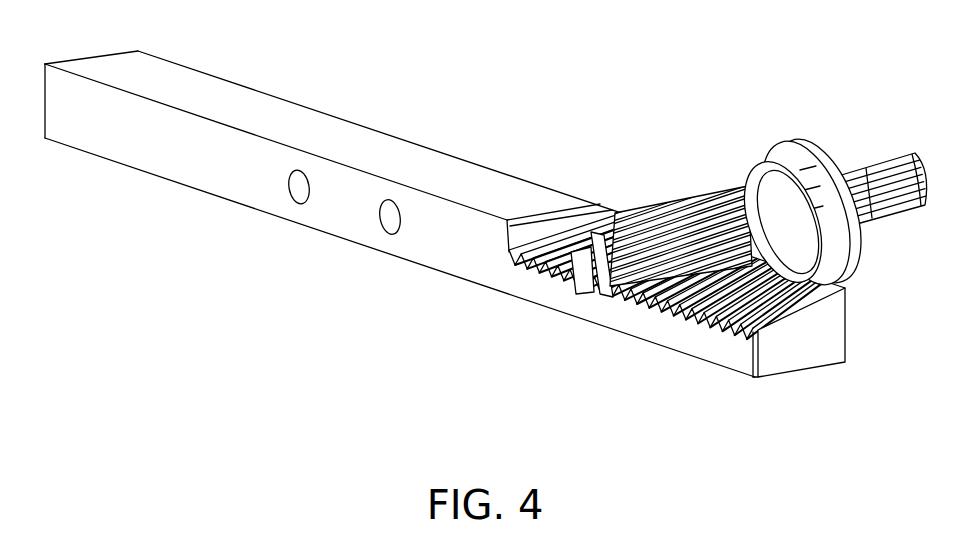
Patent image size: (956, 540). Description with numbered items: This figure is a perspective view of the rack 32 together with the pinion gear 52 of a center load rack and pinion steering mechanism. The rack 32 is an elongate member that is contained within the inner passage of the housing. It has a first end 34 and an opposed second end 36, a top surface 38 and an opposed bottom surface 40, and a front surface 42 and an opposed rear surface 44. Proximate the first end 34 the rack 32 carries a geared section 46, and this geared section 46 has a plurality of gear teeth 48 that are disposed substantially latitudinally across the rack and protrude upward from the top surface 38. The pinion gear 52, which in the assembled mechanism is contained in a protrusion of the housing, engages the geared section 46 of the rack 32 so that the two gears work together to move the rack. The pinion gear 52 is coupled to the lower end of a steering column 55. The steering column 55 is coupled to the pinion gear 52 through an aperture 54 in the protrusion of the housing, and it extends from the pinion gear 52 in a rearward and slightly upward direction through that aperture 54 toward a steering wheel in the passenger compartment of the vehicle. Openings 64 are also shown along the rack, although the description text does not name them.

The rack 32 is at (477, 262).
The first end 34 is at (782, 366).
The second end 36 is at (55, 105).
The top surface 38 is at (205, 92).
The bottom surface 40 is at (213, 201).
The front surface 42 is at (150, 157).
The rear surface 44 is at (326, 105).
The geared section 46 is at (635, 322).
The gear teeth 48 is at (688, 320).
The pinion gear 52 is at (687, 207).
The aperture 54 is at (804, 212).
The steering column 55 is at (887, 178).
The mounting holes 64 is at (390, 218).